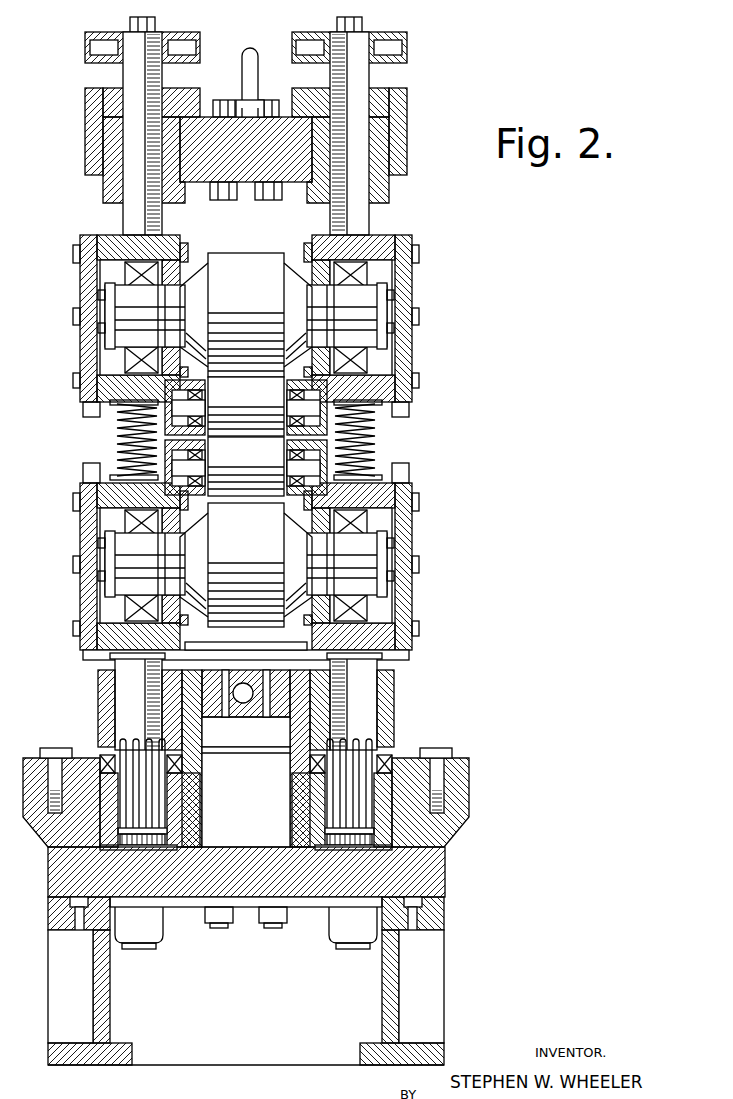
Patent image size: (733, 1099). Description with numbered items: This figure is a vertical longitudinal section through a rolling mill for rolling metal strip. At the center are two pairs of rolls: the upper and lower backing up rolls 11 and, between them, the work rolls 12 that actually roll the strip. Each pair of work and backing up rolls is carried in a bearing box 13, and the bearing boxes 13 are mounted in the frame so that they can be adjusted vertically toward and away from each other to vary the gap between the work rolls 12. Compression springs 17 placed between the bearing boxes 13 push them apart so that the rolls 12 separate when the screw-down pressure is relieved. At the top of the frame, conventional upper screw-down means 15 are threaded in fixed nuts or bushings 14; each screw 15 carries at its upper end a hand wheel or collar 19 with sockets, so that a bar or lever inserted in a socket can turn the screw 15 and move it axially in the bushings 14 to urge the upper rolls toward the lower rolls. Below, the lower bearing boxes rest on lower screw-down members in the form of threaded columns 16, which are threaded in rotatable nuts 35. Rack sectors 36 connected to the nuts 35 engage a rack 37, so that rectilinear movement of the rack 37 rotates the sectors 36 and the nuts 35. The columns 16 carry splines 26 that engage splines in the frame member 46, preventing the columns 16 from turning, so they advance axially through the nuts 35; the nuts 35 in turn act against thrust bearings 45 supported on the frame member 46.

The backing up rolls 11 is at (257, 286).
The work rolls 12 is at (257, 409).
The bearing boxes 13 is at (80, 242).
The fixed nuts or bushings 14 is at (412, 129).
The upper screw-down means 15 is at (123, 78).
The threaded columns 16 is at (83, 660).
The compression springs 17 is at (112, 432).
The hand wheel or collar 19 is at (383, 35).
The splines 26 is at (413, 752).
The rotatable nuts 35 is at (97, 692).
The rack sectors 36 is at (280, 723).
The rack 37 is at (242, 683).
The thrust bearings 45 is at (98, 745).
The frame member 46 is at (380, 825).